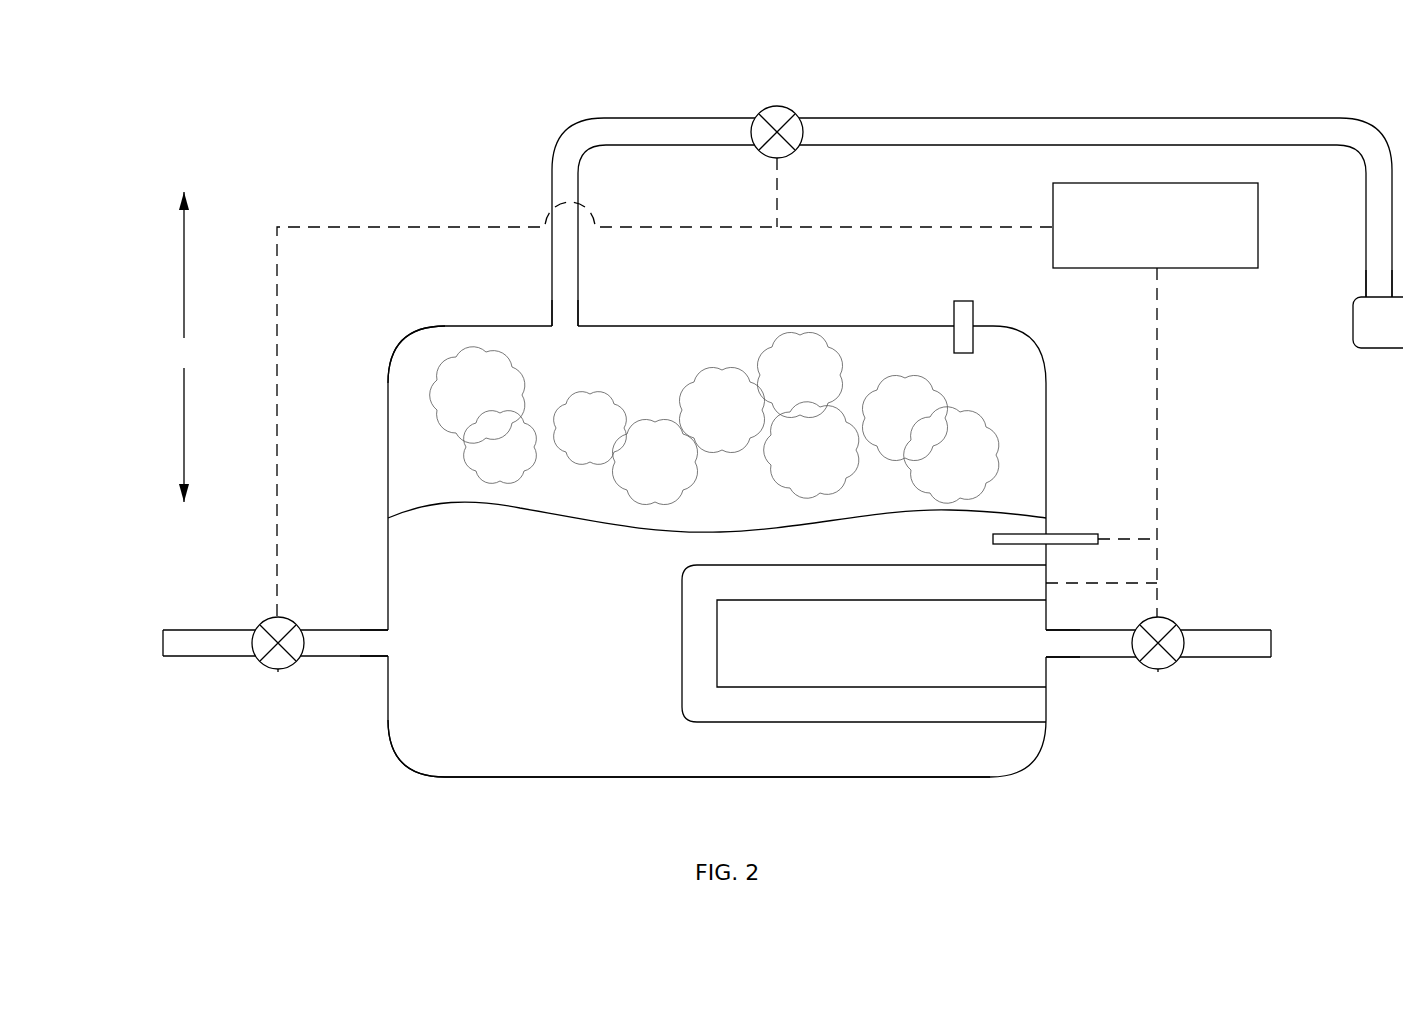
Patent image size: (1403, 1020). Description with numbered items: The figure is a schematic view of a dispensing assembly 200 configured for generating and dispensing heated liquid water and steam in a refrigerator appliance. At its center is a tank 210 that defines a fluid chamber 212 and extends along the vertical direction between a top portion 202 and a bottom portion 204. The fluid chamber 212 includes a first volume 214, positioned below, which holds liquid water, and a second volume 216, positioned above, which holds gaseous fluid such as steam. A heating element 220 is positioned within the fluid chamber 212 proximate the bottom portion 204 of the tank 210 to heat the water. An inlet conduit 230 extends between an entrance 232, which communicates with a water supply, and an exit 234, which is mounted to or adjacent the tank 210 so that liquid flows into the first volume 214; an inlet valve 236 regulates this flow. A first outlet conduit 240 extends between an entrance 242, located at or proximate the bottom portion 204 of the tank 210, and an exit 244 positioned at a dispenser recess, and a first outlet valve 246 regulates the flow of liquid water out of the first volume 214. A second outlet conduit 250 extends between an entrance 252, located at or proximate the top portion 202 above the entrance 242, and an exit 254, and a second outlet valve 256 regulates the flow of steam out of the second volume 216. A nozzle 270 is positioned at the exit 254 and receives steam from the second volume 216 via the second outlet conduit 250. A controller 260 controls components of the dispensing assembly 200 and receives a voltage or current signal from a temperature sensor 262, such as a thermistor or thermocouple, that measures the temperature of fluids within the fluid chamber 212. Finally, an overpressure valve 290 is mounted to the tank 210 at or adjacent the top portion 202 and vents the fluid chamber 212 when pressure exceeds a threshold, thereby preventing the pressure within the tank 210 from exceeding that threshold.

The dispensing assembly 200 is at (262, 172).
The top portion 202 is at (397, 331).
The bottom portion 204 is at (397, 773).
The tank 210 is at (387, 482).
The fluid chamber 212 is at (452, 557).
The first volume 214 is at (694, 753).
The second volume 216 is at (691, 352).
The heating element 220 is at (785, 600).
The inlet conduit 230 is at (1200, 630).
The entrance 232 is at (1272, 643).
The exit 234 is at (1043, 643).
The inlet valve 236 is at (1158, 670).
The first outlet conduit 240 is at (313, 630).
The entrance 242 is at (388, 643).
The exit 244 is at (163, 643).
The first outlet valve 246 is at (278, 670).
The second outlet conduit 250 is at (878, 145).
The entrance 252 is at (566, 338).
The exit 254 is at (1380, 290).
The second outlet valve 256 is at (767, 108).
The controller 260 is at (1155, 225).
The temperature sensor 262 is at (1060, 534).
The nozzle 270 is at (1353, 318).
The overpressure valve 290 is at (953, 315).